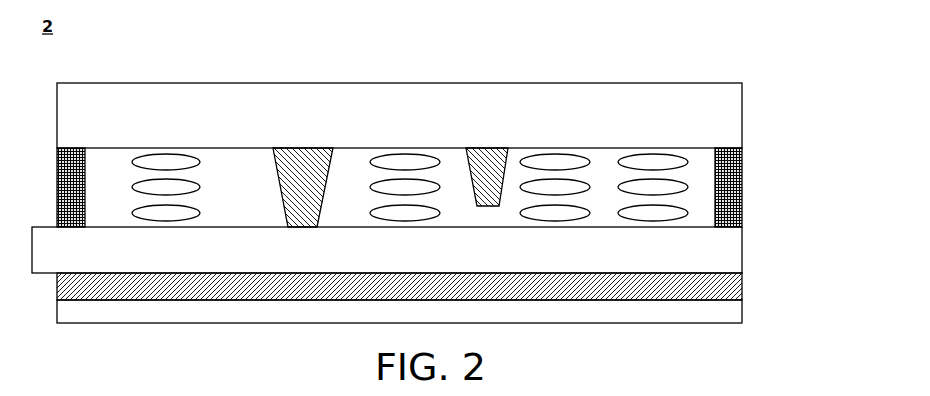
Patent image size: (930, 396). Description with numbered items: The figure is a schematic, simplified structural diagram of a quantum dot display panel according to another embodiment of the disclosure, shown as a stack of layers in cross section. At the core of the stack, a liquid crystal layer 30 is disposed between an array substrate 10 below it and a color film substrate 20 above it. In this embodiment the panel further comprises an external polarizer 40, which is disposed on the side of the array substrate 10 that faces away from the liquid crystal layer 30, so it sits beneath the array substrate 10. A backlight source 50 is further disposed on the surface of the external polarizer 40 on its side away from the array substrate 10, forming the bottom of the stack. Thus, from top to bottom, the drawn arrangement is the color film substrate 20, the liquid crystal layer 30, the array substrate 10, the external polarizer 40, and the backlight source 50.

The array substrate 10 is at (703, 260).
The color film substrate 20 is at (705, 120).
The liquid crystal layer 30 is at (683, 188).
The external polarizer 40 is at (708, 290).
The backlight source 50 is at (703, 315).